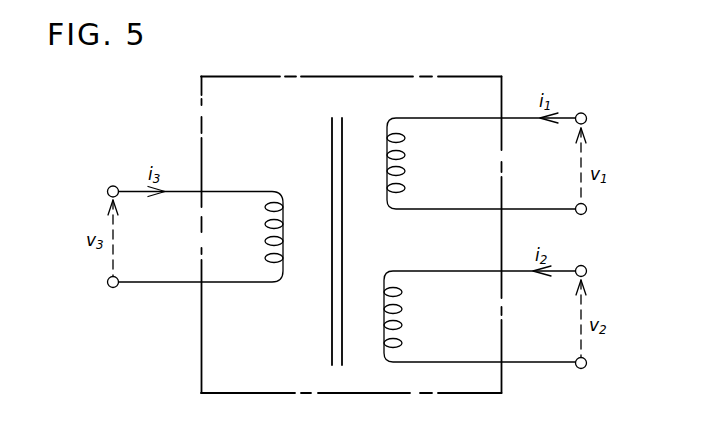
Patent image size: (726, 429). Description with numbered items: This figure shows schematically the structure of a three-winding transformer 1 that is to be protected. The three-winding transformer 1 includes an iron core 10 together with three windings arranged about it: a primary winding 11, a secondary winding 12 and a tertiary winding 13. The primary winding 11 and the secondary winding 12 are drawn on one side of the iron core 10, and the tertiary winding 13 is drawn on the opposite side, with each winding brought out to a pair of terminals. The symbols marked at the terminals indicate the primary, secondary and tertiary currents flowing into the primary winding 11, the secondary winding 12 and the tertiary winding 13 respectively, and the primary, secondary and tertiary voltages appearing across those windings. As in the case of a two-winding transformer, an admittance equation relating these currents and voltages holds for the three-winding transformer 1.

The three-winding transformer 1 is at (450, 76).
The iron core 10 is at (327, 126).
The primary winding 11 is at (404, 170).
The secondary winding 12 is at (402, 322).
The tertiary winding 13 is at (270, 284).